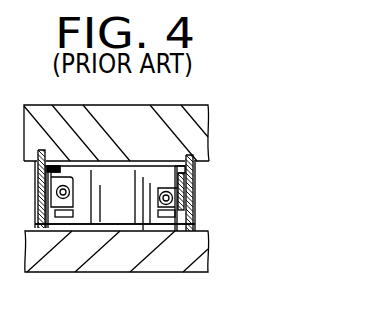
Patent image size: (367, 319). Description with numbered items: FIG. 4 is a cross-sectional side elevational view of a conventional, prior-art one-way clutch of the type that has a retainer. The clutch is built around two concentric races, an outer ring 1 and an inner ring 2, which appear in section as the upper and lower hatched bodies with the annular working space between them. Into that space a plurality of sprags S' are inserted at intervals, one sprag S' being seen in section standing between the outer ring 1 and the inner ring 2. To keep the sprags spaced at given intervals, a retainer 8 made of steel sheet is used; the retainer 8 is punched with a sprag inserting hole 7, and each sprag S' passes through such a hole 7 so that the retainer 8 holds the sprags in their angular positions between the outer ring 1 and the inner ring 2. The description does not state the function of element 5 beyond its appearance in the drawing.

The outer ring 1 is at (180, 108).
The inner ring 2 is at (66, 262).
The ball bearing 5 is at (165, 217).
The sprag inserting hole 7 is at (172, 175).
The retainer 8 is at (189, 196).
The sprag S' is at (115, 267).